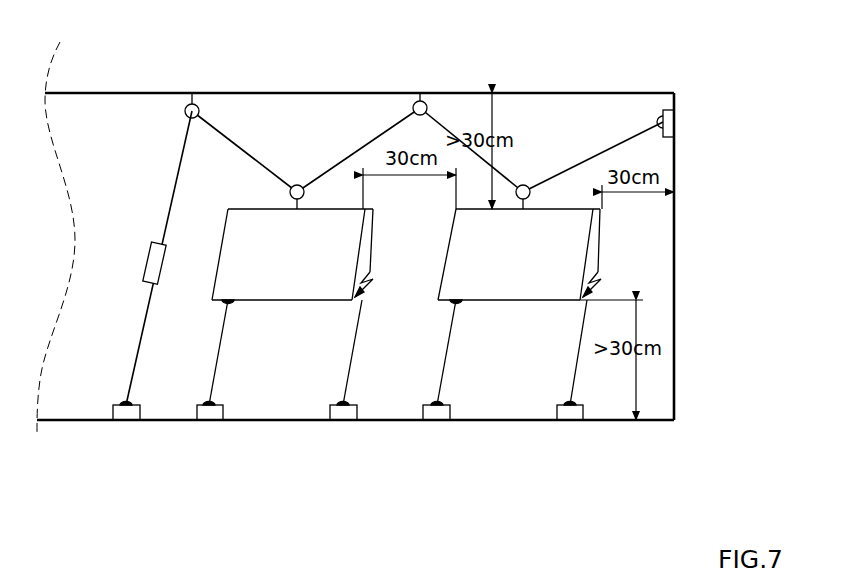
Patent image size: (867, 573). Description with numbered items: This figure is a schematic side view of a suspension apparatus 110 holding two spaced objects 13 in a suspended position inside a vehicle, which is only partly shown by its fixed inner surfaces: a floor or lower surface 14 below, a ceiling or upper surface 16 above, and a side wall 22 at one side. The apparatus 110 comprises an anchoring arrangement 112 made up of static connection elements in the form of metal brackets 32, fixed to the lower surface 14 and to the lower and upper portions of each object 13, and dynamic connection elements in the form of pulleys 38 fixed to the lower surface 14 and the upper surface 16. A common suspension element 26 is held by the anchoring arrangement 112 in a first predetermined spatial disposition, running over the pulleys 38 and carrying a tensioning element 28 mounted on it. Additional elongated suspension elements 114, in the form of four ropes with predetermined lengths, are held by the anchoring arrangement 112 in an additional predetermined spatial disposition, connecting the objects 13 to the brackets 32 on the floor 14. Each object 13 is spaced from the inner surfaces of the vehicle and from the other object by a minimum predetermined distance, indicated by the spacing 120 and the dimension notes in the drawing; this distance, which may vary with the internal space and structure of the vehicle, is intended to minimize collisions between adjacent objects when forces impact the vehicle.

The suspension apparatus 110 is at (580, 66).
The anchoring arrangement 112 is at (706, 119).
The ceiling or upper surface 16 is at (345, 93).
The side wall 22 is at (675, 255).
The floor or lower surface 14 is at (98, 420).
The pulleys 38 is at (185, 108).
The suspension element 26 is at (180, 166).
The tensioning element 28 is at (147, 262).
The object 13 is at (258, 255).
The additional elongated suspension elements 114 is at (351, 360).
The metal brackets 32 is at (200, 412).
The spacing 120 is at (403, 570).